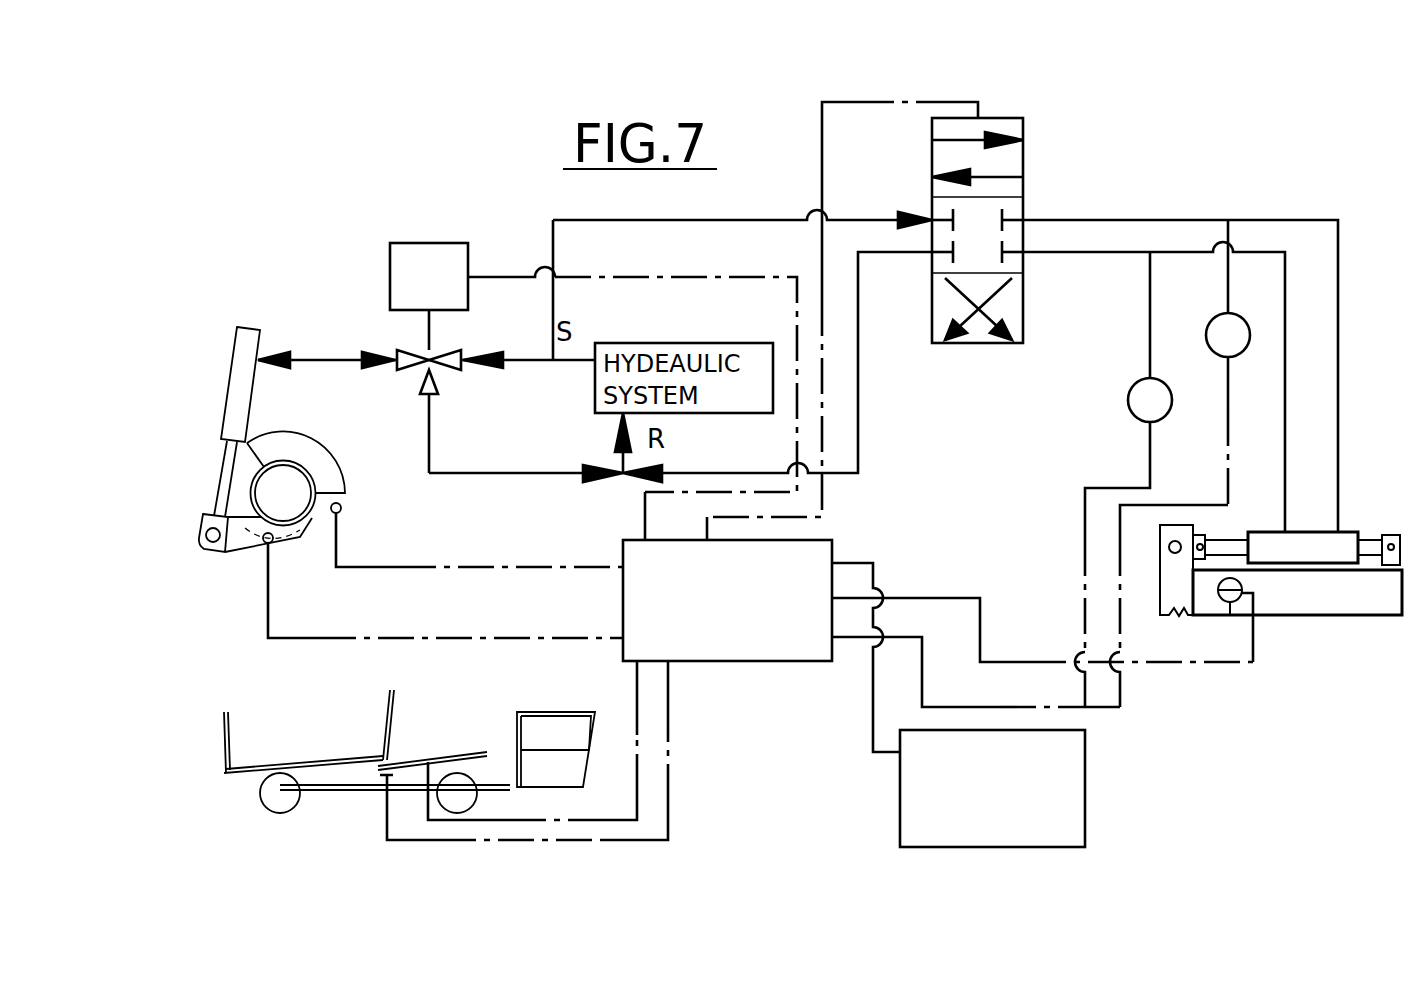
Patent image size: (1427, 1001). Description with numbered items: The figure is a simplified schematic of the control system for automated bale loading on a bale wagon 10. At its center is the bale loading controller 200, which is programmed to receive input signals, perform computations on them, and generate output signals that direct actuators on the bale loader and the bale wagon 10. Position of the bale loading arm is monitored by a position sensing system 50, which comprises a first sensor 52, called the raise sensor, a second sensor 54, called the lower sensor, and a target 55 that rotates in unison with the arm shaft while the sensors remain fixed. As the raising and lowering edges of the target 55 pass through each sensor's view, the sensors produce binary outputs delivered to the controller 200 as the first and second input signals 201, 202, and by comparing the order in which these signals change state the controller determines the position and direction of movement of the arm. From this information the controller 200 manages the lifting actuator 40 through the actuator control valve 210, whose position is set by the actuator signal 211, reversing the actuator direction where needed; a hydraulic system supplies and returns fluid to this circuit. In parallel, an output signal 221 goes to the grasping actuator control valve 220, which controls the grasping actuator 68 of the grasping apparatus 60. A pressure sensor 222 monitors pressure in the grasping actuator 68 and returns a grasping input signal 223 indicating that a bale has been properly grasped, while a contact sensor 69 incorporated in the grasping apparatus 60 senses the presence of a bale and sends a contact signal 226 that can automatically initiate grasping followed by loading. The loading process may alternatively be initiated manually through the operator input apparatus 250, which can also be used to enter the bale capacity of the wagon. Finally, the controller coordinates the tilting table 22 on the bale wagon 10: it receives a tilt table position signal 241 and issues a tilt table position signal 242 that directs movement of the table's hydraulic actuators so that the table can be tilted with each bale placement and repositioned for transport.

The bale wagon 10 is at (409, 731).
The tilting table 22 is at (468, 757).
The actuator 40 is at (232, 348).
The position sensing system 50 is at (254, 600).
The first sensor 52 is at (262, 542).
The second sensor 54 is at (341, 511).
The target 55 is at (292, 447).
The grasping apparatus 60 is at (1278, 654).
The grasping actuator 68 is at (1327, 565).
The contact sensor 69 is at (1232, 604).
The bale loading controller 200 is at (800, 661).
The first input signal 201 is at (488, 633).
The second input signal 202 is at (520, 560).
The actuator control valve 210 is at (435, 262).
The actuator signal 211 is at (641, 516).
The grasping actuator control valve 220 is at (1022, 139).
The output signal 221 is at (873, 705).
The pressure sensor 222 is at (1206, 335).
The grasping input signal 223 is at (1120, 555).
The contact signal 226 is at (1035, 660).
The tilt table position signal 241 is at (386, 825).
The tilt table position signal 242 is at (668, 795).
The operator input apparatus 250 is at (1085, 790).